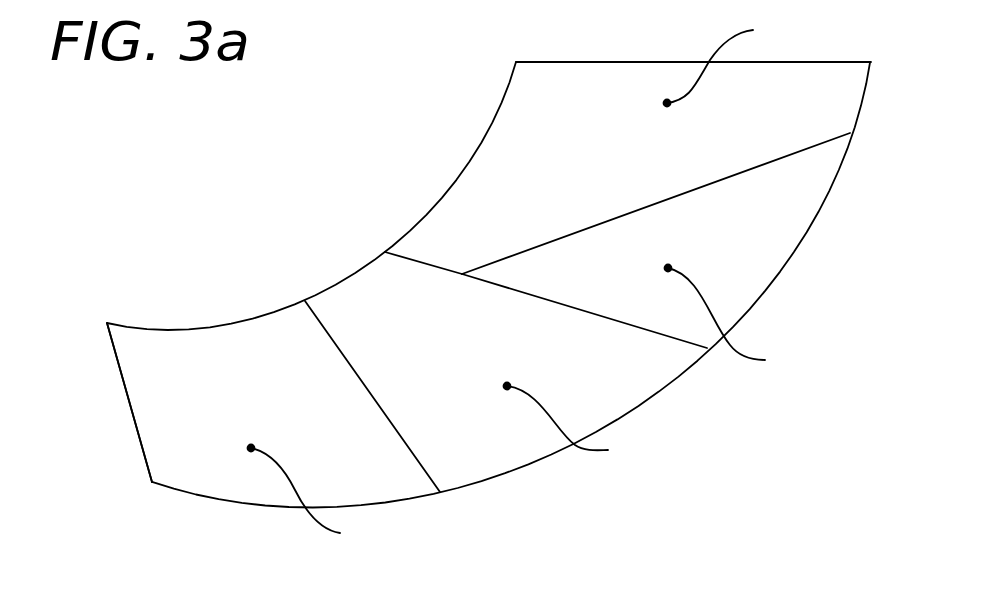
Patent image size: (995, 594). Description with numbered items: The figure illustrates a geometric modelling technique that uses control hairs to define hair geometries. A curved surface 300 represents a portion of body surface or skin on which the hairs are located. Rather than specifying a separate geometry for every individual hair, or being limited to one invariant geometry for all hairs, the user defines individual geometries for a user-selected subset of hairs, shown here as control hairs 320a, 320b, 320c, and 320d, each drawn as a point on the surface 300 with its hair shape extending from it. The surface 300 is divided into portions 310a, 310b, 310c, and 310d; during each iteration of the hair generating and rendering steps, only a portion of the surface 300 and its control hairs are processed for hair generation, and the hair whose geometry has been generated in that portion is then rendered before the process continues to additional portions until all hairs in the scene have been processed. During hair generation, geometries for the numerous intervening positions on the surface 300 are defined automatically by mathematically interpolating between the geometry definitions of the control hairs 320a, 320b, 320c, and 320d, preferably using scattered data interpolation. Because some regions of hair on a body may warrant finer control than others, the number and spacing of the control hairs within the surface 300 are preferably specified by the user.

The surface 300 is at (283, 162).
The control hair portion 310a is at (617, 203).
The control hair portion 310b is at (584, 306).
The control hair portion 310c is at (372, 388).
The control hair portion 310d is at (147, 402).
The control hair 320a is at (682, 98).
The control hair 320b is at (695, 278).
The control hair 320c is at (540, 392).
The control hair 320d is at (267, 452).